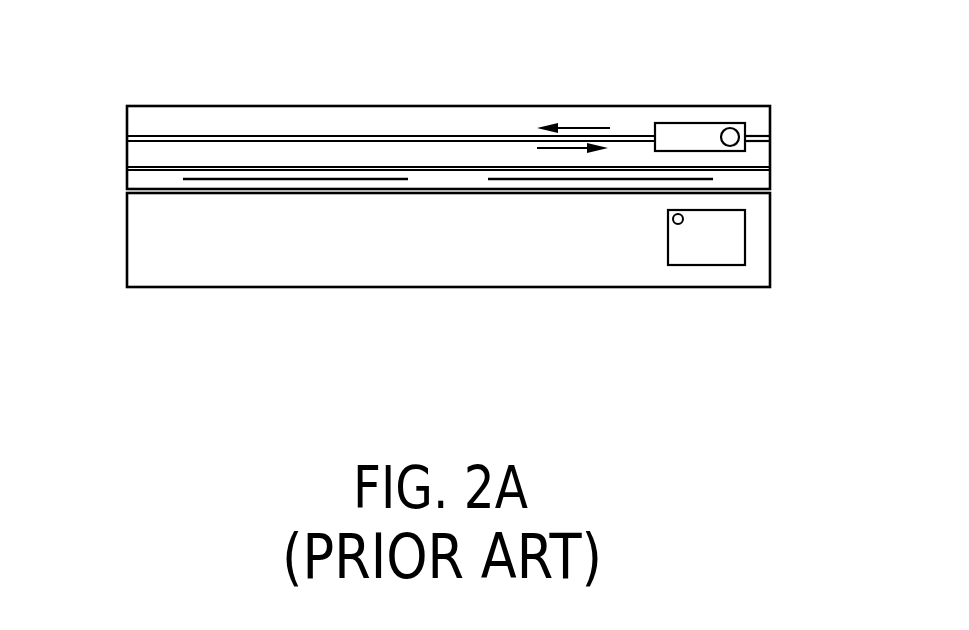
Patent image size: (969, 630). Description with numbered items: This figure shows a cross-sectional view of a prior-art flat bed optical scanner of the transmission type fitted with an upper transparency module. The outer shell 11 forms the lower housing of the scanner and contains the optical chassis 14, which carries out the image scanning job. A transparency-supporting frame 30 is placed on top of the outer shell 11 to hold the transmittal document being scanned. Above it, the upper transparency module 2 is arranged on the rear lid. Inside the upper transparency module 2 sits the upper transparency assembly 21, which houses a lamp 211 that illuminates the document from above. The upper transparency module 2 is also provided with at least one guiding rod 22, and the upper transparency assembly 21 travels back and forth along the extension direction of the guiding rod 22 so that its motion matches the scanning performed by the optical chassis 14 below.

The upper transparency module 2 is at (427, 180).
The guiding rod 22 is at (236, 141).
The upper transparency assembly 21 is at (722, 82).
The lamp 211 is at (730, 128).
The transparency-supporting frame 30 is at (409, 260).
The outer shell 11 is at (455, 240).
The optical chassis 14 is at (743, 235).